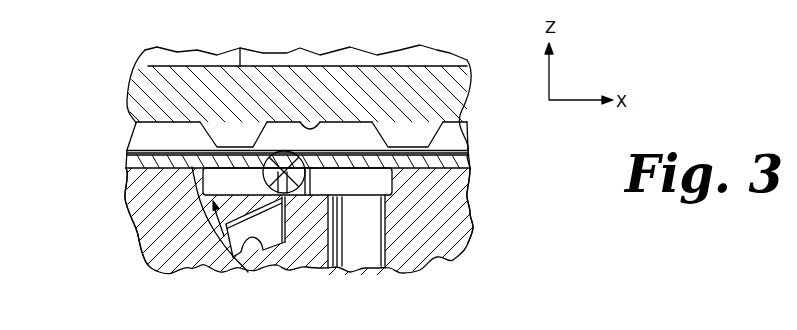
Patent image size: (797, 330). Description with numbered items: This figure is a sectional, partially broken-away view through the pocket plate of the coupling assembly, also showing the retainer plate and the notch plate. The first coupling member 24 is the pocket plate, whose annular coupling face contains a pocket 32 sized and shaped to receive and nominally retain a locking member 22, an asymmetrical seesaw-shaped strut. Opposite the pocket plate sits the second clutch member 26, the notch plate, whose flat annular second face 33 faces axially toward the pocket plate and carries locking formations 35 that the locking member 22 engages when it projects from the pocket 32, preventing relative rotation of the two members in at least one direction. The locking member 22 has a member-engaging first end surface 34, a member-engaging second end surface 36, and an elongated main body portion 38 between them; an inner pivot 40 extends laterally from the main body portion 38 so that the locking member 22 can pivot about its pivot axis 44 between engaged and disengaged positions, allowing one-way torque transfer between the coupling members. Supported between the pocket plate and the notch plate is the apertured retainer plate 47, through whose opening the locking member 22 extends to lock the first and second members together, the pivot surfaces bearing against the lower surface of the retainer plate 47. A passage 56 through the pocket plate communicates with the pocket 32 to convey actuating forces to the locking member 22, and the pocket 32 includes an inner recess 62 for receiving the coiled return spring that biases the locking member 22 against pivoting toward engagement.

The locking member 22 is at (180, 228).
The first coupling member 24 is at (456, 247).
The second clutch member 26 is at (428, 68).
The pocket 32 is at (407, 176).
The second face 33 is at (322, 121).
The first end surface 34 is at (203, 180).
The locking formations 35 is at (248, 140).
The second end surface 36 is at (397, 183).
The main body portion 38 is at (336, 196).
The inner pivot 40 is at (284, 197).
The pivot axis 44 is at (208, 265).
The retainer plate 47 is at (128, 164).
The passage 56 is at (390, 238).
The inner recess 62 is at (266, 189).